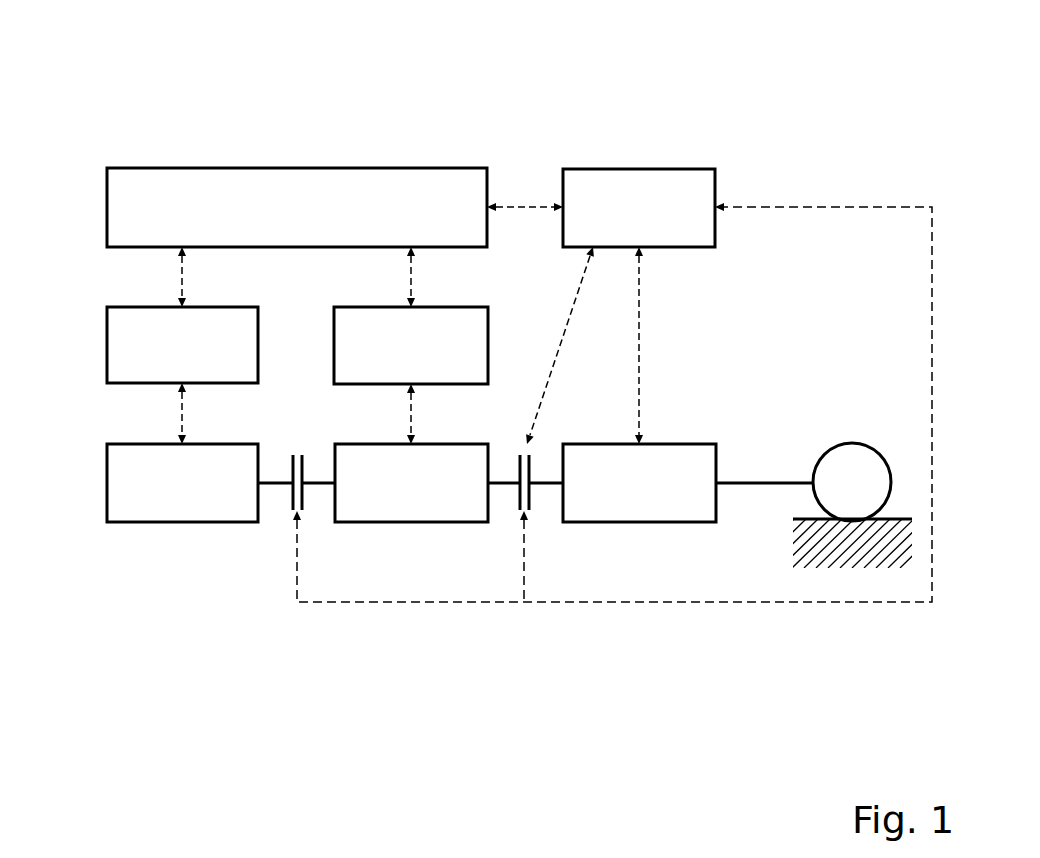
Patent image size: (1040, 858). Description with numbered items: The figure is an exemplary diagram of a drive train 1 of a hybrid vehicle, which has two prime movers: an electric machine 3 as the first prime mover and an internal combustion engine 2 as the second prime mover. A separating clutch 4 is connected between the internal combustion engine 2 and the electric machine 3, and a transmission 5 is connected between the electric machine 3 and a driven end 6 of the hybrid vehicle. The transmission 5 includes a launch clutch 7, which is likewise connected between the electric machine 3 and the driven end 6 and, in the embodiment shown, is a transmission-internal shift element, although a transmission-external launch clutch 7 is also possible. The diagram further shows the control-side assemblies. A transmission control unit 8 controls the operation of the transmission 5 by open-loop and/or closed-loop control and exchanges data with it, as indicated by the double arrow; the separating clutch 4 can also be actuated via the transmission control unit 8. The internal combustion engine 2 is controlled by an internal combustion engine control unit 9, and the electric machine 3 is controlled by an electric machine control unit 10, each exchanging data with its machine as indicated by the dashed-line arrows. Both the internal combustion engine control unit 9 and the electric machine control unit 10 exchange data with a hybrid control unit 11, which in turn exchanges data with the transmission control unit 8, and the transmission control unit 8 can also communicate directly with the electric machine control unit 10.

The drive train 1 is at (216, 575).
The internal combustion engine 2 is at (145, 522).
The electric machine 3 is at (353, 522).
The separating clutch 4 is at (292, 438).
The transmission 5 is at (647, 522).
The driven end 6 is at (817, 497).
The launch clutch 7 is at (526, 522).
The transmission control unit 8 is at (652, 168).
The internal combustion engine control unit 9 is at (107, 320).
The electric machine control unit 10 is at (375, 307).
The hybrid control unit 11 is at (212, 168).